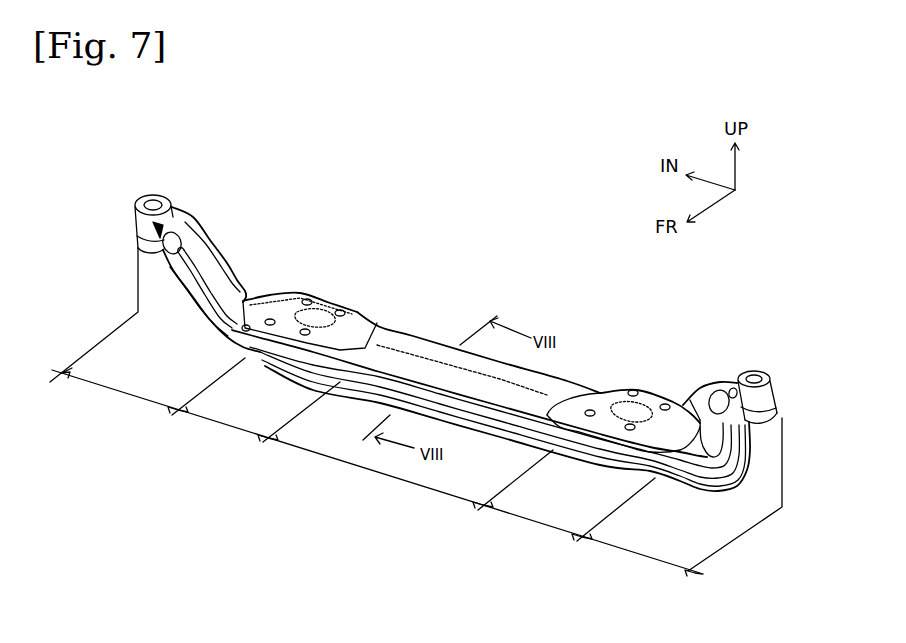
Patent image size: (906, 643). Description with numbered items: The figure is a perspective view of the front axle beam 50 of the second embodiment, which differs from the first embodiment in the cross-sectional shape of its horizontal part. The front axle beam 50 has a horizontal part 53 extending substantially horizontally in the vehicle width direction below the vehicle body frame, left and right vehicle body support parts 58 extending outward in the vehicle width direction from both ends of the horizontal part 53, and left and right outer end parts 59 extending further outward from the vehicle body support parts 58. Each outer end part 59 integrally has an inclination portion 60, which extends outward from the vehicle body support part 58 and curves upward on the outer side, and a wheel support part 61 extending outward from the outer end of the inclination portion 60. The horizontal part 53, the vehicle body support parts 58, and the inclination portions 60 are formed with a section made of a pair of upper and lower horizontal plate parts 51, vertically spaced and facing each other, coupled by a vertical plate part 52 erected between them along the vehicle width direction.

The front axle beam 50 is at (413, 333).
The horizontal plate parts 51 is at (567, 380).
The vertical plate part 52 is at (383, 388).
The horizontal part 53 is at (375, 471).
The vehicle body support parts 58 is at (380, 468).
The outer end parts 59 is at (378, 473).
The inclination portion 60 is at (223, 254).
The wheel support part 61 is at (158, 197).